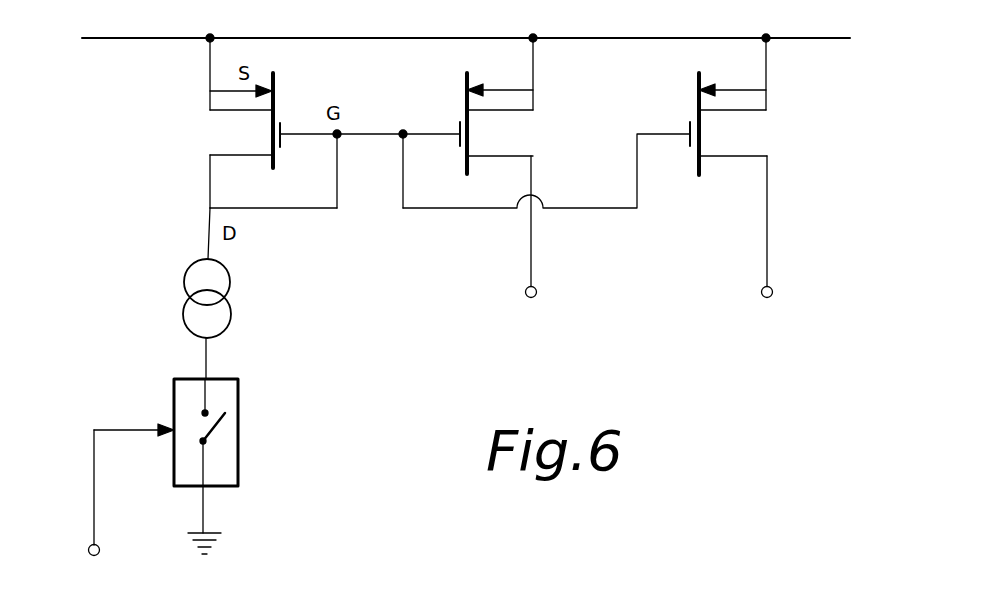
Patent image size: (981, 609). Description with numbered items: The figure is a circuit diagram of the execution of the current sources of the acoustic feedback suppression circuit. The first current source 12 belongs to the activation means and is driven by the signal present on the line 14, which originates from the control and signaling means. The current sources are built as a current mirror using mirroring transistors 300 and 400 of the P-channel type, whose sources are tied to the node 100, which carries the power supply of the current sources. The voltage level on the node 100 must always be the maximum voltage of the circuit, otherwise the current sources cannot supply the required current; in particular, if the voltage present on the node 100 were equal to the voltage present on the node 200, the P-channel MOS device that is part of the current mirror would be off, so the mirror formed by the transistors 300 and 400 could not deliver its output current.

The node 100 is at (536, 37).
The first current source 12 is at (218, 308).
The line 14 is at (98, 527).
The node 200 is at (538, 291).
The mirroring transistor 300 is at (498, 162).
The mirroring transistor 400 is at (730, 158).